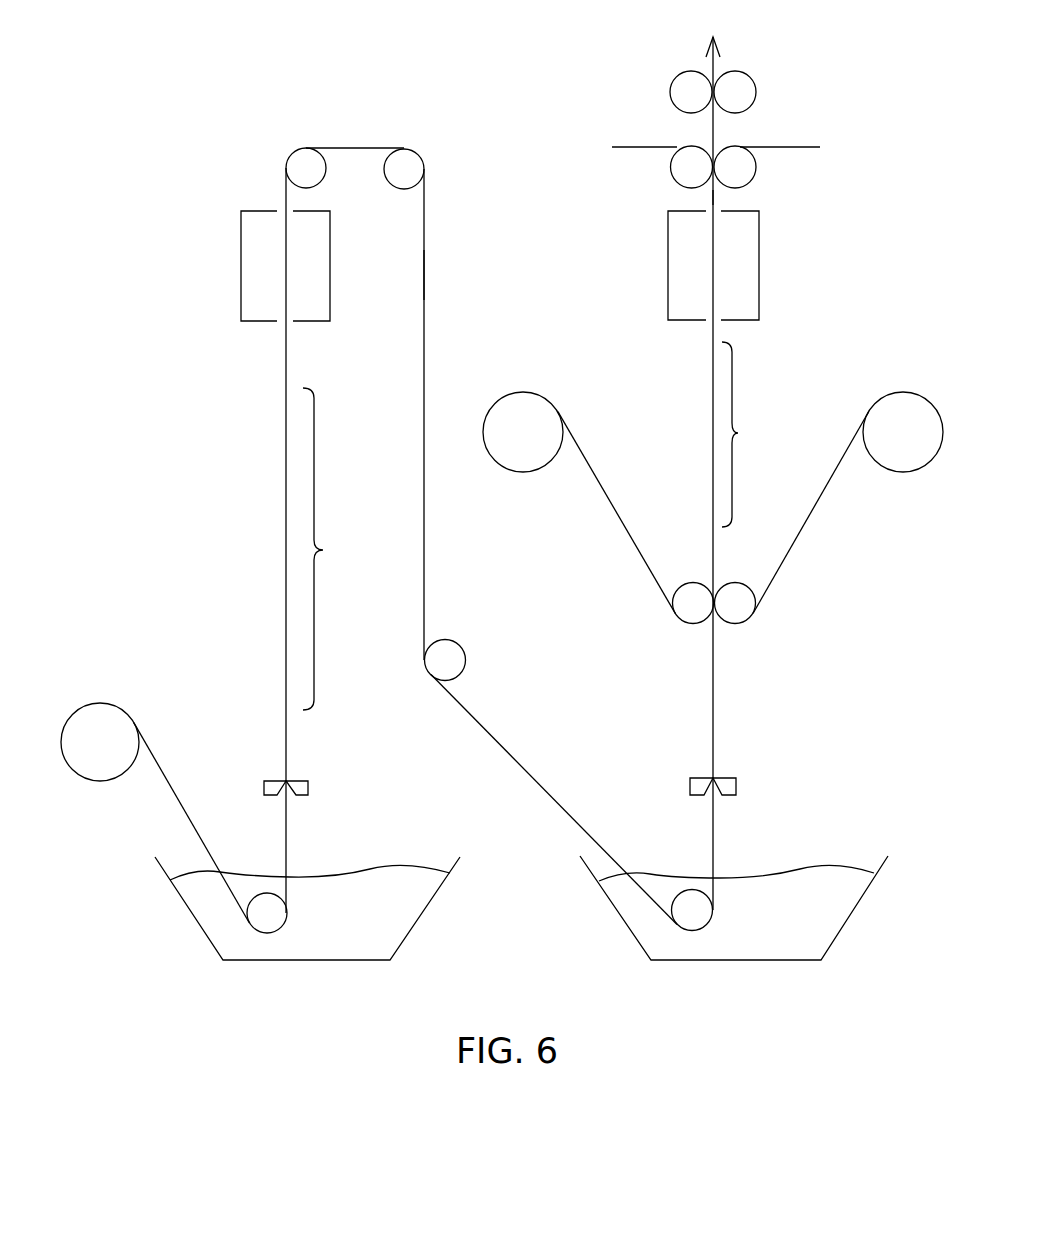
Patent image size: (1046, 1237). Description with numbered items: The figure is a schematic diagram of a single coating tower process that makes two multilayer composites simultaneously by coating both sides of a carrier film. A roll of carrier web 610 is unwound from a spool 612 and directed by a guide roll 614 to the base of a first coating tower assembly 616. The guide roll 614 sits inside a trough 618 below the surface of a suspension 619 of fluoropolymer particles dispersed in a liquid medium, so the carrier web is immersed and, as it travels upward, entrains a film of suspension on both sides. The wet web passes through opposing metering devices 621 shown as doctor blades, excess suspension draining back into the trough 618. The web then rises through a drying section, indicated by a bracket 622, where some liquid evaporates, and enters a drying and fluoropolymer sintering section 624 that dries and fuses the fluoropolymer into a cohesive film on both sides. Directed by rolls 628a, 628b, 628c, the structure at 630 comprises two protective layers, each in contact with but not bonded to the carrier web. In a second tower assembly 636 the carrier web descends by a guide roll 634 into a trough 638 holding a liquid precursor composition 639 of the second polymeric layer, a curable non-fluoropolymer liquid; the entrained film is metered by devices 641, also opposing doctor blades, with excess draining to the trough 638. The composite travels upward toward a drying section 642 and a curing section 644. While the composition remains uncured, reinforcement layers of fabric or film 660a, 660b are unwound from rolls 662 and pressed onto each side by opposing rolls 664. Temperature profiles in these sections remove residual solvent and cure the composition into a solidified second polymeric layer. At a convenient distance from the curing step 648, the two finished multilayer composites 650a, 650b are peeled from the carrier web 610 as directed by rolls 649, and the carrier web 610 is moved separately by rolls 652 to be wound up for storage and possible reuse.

The carrier web 610 is at (178, 797).
The spool 612 is at (82, 783).
The guide roll 614 is at (253, 930).
The first coating tower assembly 616 is at (229, 593).
The trough 618 is at (404, 940).
The suspension 619 is at (357, 870).
The air knife / nozzle 621 is at (273, 781).
The drying section 622 is at (323, 550).
The drying and fluoropolymer sintering section 624 is at (241, 307).
The roll 628a is at (285, 165).
The roll 628b is at (420, 153).
The roll 628c is at (464, 641).
The carrier web with two protective layers 630 is at (424, 235).
The guide roll 634 is at (678, 928).
The tower assembly 636 is at (769, 711).
The trough 638 is at (866, 890).
The liquid precursor composition 639 is at (840, 862).
The metering devices 641 is at (702, 778).
The drying section 642 is at (738, 433).
The curing section 644 is at (668, 303).
The curing step 648 is at (714, 198).
The rolls 649 is at (670, 165).
The finished multilayer composite 650a is at (638, 147).
The finished multilayer composite 650b is at (793, 147).
The rolls 652 is at (753, 90).
The reinforcement layer 660a is at (607, 497).
The reinforcement layer 660b is at (788, 553).
The rolls 662 is at (498, 465).
The opposing rolls 664 is at (678, 620).